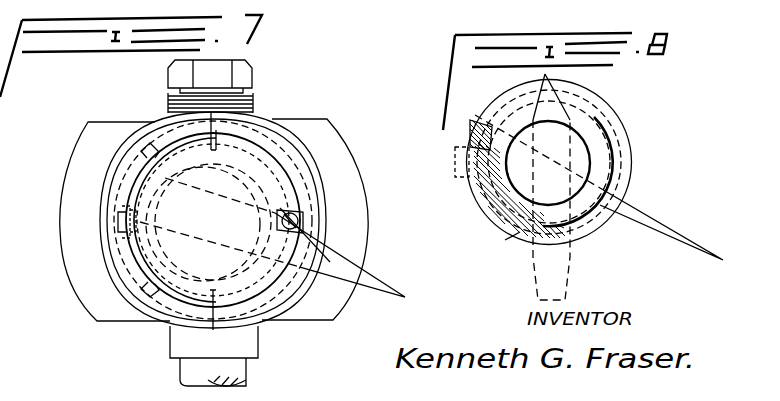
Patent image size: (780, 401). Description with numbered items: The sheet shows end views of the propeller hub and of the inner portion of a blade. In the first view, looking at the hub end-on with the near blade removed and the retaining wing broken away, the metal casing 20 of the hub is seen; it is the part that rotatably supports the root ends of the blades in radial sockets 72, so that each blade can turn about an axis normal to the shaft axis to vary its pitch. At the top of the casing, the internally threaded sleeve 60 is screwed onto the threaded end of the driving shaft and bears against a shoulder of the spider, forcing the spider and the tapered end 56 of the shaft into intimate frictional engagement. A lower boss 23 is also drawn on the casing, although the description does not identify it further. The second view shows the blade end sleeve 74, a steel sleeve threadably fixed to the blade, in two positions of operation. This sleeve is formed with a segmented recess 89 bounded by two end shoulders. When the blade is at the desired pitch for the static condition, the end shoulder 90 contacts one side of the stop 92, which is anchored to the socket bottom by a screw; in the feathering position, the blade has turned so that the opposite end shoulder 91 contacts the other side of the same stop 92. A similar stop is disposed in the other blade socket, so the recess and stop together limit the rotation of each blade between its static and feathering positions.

In FIG. 7, the metal casing 20 is at (333, 143).
In FIG. 7, the bottom boss 23 is at (248, 346).
In FIG. 7, the tapered end of the driving shaft 56 is at (243, 370).
In FIG. 7, the internally threaded sleeve 60 is at (250, 72).
In FIG. 7, the radial socket 72 is at (323, 208).
In FIG. 8, the steel sleeve 74 is at (618, 121).
In FIG. 8, the segmented recess 89 is at (518, 227).
In FIG. 8, the end shoulder 90 is at (468, 140).
In FIG. 8, the end shoulder 91 is at (505, 240).
In FIG. 8, the stop 92 is at (456, 152).